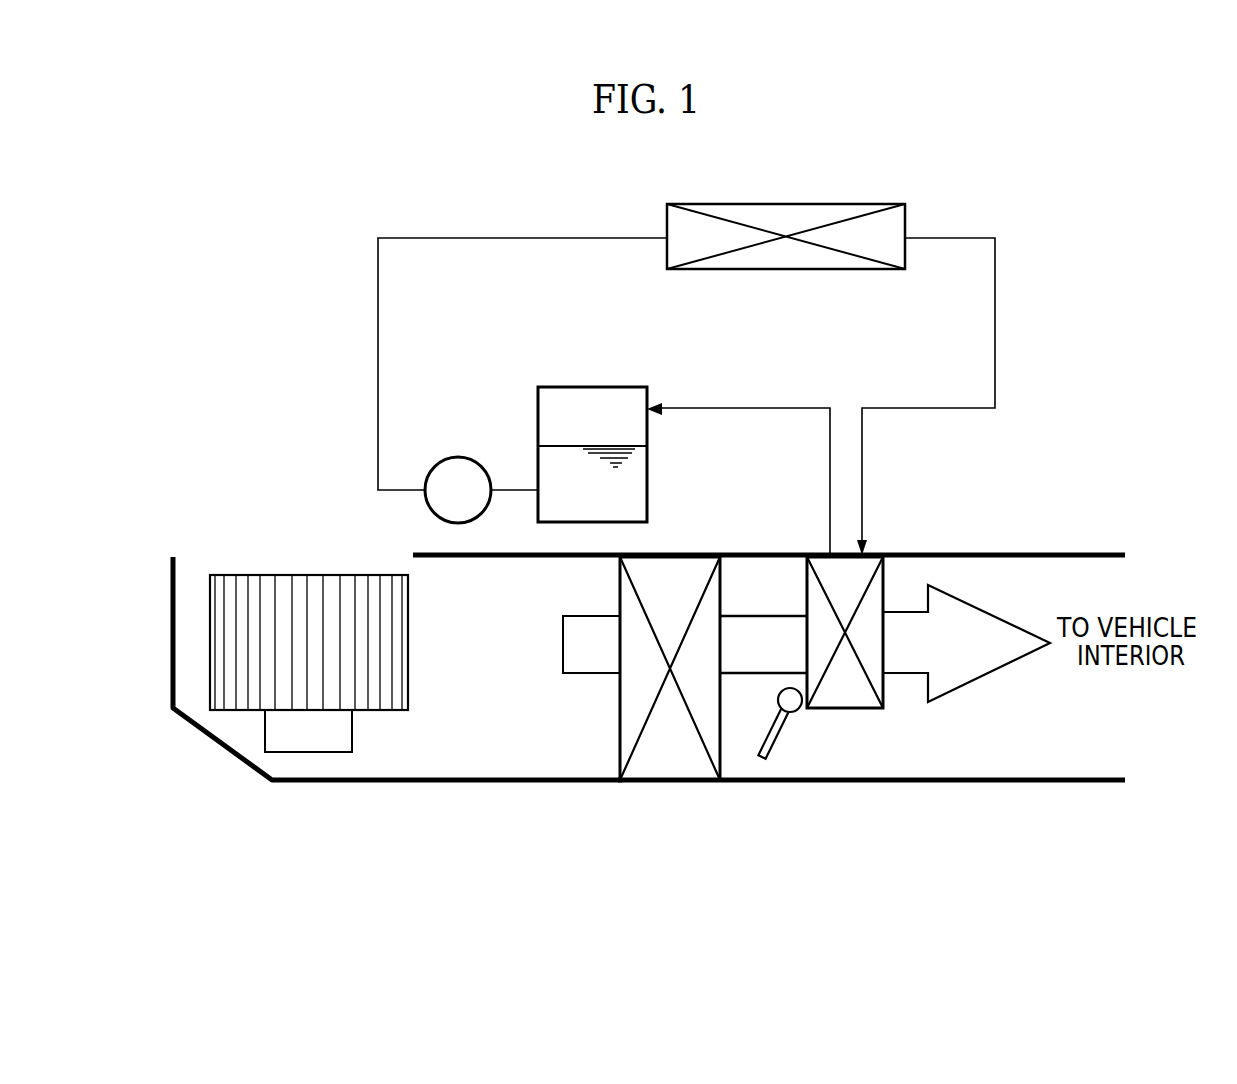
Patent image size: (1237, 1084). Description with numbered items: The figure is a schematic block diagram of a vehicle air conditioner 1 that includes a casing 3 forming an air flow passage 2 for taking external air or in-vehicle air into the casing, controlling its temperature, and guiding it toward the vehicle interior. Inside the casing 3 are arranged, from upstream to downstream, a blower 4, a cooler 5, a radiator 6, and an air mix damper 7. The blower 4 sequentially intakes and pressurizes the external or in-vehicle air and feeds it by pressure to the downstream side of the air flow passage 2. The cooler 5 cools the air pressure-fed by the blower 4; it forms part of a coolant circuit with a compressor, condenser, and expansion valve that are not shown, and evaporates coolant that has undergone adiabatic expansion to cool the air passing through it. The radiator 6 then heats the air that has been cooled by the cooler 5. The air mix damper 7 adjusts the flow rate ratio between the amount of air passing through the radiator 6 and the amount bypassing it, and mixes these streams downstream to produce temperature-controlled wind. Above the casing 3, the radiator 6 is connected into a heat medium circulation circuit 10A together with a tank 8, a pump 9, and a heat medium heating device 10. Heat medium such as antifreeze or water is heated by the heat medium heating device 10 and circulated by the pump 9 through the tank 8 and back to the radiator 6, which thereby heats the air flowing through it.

The vehicle air conditioner 1 is at (582, 797).
The air flow passage 2 is at (460, 740).
The casing 3 is at (980, 783).
The blower 4 is at (268, 575).
The cooler 5 is at (677, 760).
The radiator 6 is at (858, 709).
The air mix damper 7 is at (778, 740).
The tank 8 is at (588, 387).
The pump 9 is at (455, 457).
The heat medium heating device 10 is at (803, 204).
The heat medium circulation circuit 10A is at (479, 224).